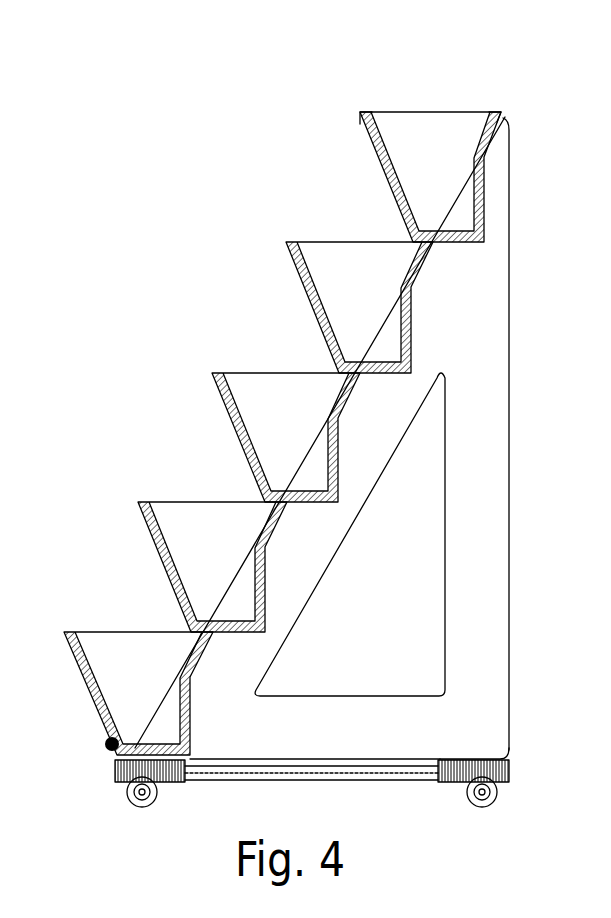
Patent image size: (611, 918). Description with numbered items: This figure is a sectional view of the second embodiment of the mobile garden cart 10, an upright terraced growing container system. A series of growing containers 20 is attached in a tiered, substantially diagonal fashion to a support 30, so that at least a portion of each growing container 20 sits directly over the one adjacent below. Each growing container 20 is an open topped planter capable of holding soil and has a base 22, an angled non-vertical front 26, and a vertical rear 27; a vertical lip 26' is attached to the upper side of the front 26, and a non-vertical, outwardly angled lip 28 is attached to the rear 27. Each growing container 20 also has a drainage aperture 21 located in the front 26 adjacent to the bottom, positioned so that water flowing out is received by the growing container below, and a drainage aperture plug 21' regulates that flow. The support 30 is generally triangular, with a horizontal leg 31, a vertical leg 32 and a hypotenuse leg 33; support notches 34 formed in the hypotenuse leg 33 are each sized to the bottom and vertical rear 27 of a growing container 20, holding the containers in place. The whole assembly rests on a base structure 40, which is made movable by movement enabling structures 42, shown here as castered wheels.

The mobile garden cart 10 is at (170, 306).
The growing container 20 is at (435, 159).
The drainage aperture 21 is at (320, 307).
The drainage aperture plug 21' is at (96, 788).
The base 22 is at (447, 227).
The angled non-vertical front 26 is at (355, 177).
The vertical lip 26' is at (325, 98).
The vertical rear 27 is at (487, 193).
The outwardly angled lip 28 is at (505, 123).
The support 30 is at (500, 405).
The horizontal leg 31 is at (392, 720).
The vertical leg 32 is at (492, 637).
The hypotenuse leg 33 is at (365, 463).
The support notch 34 is at (487, 222).
The base structure 40 is at (365, 777).
The movement enabling structure 42 is at (497, 792).